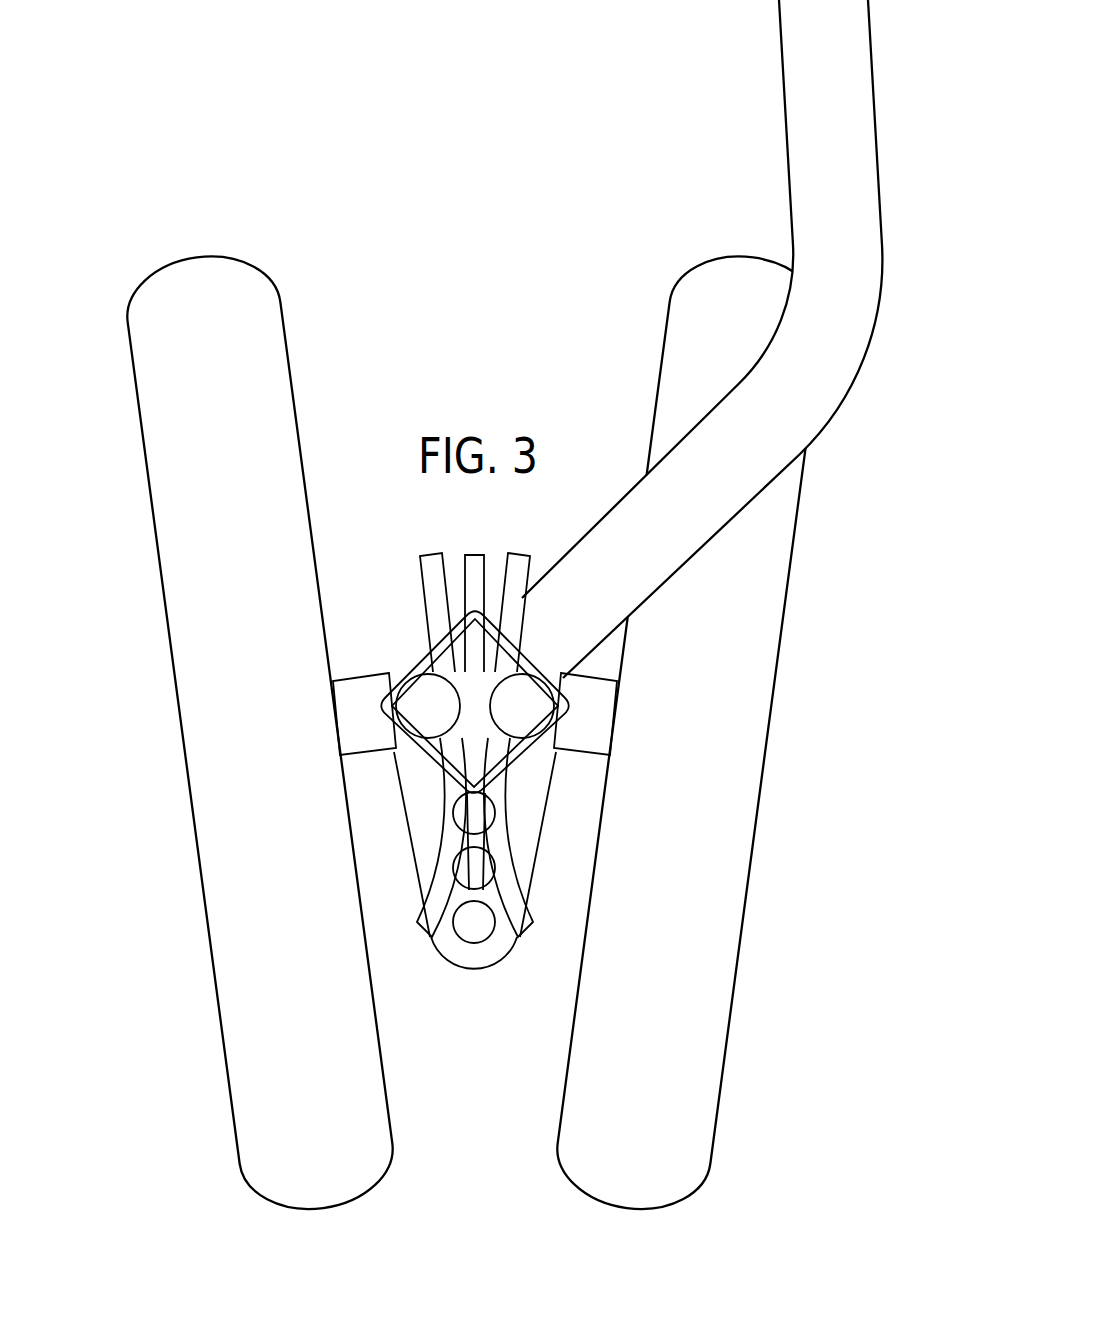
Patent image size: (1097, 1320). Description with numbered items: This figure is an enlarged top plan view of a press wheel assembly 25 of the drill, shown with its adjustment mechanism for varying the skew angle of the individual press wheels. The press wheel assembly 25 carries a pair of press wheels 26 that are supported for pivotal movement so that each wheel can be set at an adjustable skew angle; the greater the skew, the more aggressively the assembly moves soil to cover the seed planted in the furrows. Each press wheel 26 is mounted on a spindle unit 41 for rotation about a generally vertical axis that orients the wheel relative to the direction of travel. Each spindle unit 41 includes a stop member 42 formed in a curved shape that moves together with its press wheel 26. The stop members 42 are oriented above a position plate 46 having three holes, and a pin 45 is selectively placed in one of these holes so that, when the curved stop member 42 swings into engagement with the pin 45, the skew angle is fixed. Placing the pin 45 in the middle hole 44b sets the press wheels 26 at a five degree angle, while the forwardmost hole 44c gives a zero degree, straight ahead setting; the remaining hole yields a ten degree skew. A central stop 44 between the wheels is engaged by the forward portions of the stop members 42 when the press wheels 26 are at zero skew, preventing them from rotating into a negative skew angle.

The press wheel assembly 25 is at (775, 1101).
The press wheels 26 is at (170, 537).
The spindle unit 41 is at (520, 696).
The stop member 42 is at (505, 836).
The central stop 44 is at (473, 560).
The middle hole 44b is at (470, 882).
The forwardmost hole 44c is at (473, 830).
The pin 45 is at (480, 932).
The position plate 46 is at (450, 950).